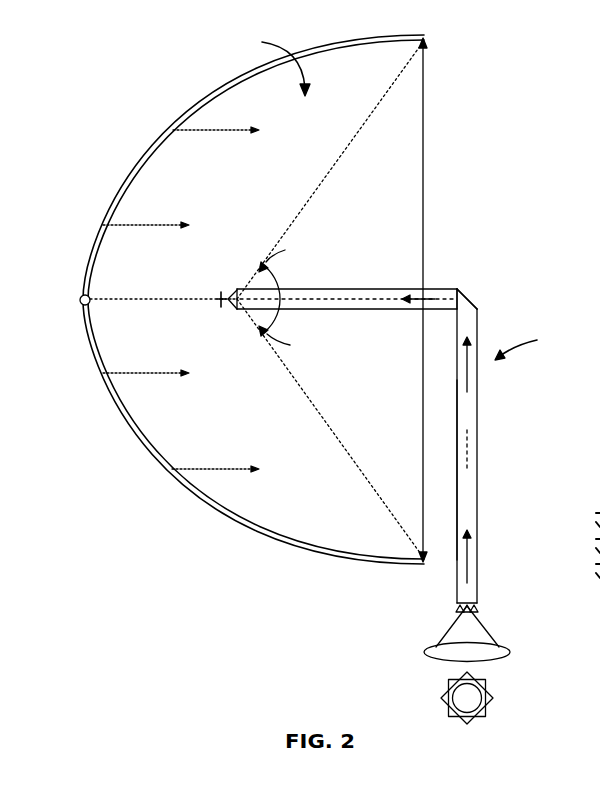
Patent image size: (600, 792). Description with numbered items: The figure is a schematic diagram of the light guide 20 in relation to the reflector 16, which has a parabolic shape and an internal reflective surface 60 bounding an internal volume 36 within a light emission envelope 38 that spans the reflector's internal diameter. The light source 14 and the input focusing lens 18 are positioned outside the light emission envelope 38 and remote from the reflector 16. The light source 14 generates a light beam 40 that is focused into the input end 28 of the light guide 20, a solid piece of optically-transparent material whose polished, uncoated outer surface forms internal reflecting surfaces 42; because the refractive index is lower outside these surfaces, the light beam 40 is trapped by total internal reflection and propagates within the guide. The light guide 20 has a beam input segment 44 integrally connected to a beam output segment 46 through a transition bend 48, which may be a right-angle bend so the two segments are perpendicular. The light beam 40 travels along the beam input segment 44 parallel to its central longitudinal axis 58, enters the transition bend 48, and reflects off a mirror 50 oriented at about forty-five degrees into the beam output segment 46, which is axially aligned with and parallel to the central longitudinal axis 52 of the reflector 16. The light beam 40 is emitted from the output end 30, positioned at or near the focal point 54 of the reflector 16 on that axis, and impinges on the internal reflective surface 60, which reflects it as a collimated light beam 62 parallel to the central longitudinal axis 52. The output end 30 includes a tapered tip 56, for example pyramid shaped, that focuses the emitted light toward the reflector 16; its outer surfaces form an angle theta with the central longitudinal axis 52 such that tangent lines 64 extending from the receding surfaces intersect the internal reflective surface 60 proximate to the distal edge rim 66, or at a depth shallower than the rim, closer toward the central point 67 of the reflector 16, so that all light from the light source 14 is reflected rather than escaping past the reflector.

The light source 14 is at (487, 712).
The reflector 16 is at (144, 152).
The input focusing lens 18 is at (428, 651).
The light guide 20 is at (529, 344).
The input end 28 is at (478, 604).
The output end 30 is at (233, 292).
The internal volume 36 is at (271, 64).
The light emission envelope 38 is at (426, 233).
The light beam 40 is at (426, 296).
The internal reflecting surfaces 42 is at (345, 288).
The beam input segment 44 is at (478, 388).
The beam output segment 46 is at (300, 289).
The transition bend 48 is at (466, 298).
The mirror 50 is at (465, 296).
The central longitudinal axis 52 is at (148, 302).
The focal point 54 is at (219, 306).
The tapered tip 56 is at (233, 306).
The central longitudinal axis 58 is at (469, 452).
The internal reflective surface 60 is at (138, 173).
The collimated light beam 62 is at (237, 130).
The tangent lines 64 is at (330, 176).
The distal edge rim 66 is at (429, 40).
The central point 67 is at (80, 302).